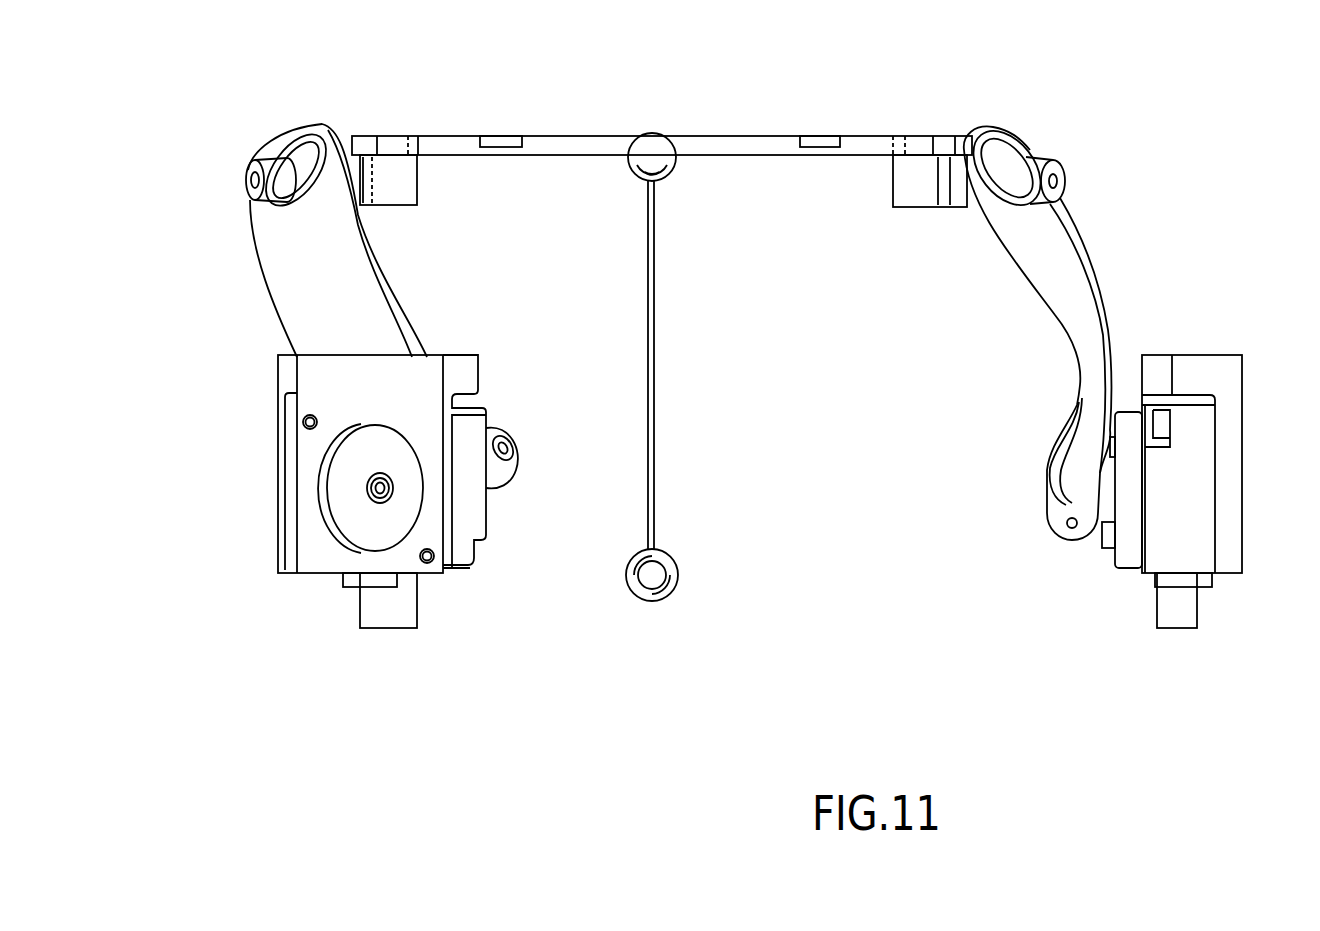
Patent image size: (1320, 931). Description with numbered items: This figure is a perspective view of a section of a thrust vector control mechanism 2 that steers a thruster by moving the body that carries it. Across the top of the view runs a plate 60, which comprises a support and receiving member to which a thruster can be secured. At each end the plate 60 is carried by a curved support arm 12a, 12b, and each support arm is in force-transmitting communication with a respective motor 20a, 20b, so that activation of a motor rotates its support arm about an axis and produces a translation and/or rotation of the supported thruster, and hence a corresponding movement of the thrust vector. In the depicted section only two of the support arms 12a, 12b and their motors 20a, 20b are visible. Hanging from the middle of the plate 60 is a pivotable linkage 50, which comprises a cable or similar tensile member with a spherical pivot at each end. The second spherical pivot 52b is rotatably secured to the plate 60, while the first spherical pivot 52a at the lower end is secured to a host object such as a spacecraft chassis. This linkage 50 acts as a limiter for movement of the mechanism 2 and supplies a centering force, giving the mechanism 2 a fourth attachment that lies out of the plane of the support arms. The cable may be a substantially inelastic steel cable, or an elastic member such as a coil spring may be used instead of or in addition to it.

The thrust vector control mechanism 2 is at (1106, 179).
The plate 60 is at (749, 134).
The second spherical pivot 52b is at (680, 190).
The first spherical pivot 52a is at (693, 566).
The pivotable linkage 50 is at (656, 496).
The support arm 12b is at (266, 300).
The support arm 12a is at (1080, 404).
The motor 20b is at (400, 648).
The motor 20a is at (1153, 612).